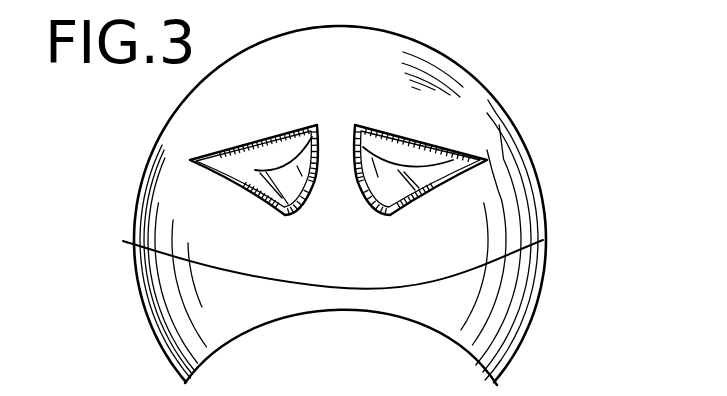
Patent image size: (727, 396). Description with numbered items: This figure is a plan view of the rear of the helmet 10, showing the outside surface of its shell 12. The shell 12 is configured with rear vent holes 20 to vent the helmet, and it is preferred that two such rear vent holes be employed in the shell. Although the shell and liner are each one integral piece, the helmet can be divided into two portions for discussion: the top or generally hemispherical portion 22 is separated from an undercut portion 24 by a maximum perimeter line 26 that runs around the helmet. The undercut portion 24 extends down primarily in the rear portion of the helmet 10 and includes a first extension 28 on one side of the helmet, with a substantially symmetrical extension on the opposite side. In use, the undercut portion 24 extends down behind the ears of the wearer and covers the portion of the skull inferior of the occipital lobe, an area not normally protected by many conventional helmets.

The helmet 10 is at (552, 134).
The shell 12 is at (532, 214).
The rear vent holes 20 is at (278, 150).
The top or generally hemispherical portion 22 is at (172, 183).
The undercut portion 24 is at (167, 330).
The maximum perimeter line 26 is at (123, 241).
The first extension 28 is at (178, 290).